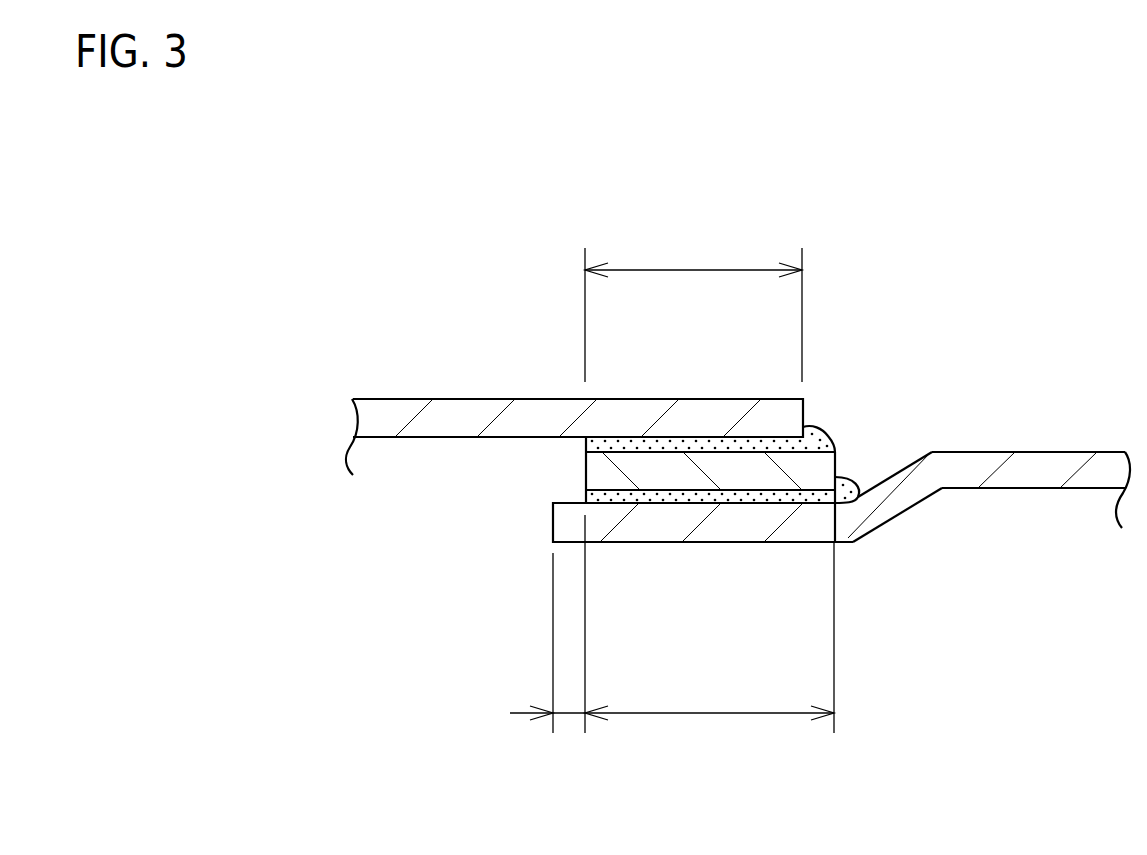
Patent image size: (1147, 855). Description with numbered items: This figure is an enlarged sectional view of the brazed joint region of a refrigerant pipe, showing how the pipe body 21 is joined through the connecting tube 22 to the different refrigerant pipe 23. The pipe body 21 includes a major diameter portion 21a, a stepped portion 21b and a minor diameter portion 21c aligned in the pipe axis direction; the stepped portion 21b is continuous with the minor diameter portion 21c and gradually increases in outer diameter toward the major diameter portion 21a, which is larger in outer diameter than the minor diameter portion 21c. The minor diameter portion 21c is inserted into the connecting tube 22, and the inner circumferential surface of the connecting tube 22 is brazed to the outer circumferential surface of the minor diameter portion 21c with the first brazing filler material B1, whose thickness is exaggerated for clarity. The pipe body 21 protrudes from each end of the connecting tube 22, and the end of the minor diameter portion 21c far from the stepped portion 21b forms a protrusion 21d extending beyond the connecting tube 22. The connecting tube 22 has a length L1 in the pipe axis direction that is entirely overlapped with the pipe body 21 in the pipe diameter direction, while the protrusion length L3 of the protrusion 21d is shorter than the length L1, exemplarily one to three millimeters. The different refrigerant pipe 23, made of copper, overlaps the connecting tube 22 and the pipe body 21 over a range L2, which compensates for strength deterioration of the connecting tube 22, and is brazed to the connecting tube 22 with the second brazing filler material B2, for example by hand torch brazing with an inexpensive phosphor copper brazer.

The pipe body 21 is at (799, 485).
The major diameter portion 21a is at (980, 464).
The stepped portion 21b is at (895, 472).
The minor diameter portion 21c is at (747, 525).
The protrusion 21d is at (565, 522).
The connecting tube 22 is at (592, 469).
The different refrigerant pipe 23 is at (440, 410).
The first brazing filler material B1 is at (657, 497).
The second brazing filler material B2 is at (694, 447).
The length L1 is at (693, 636).
The range L2 is at (693, 308).
The protrusion length L3 is at (568, 716).